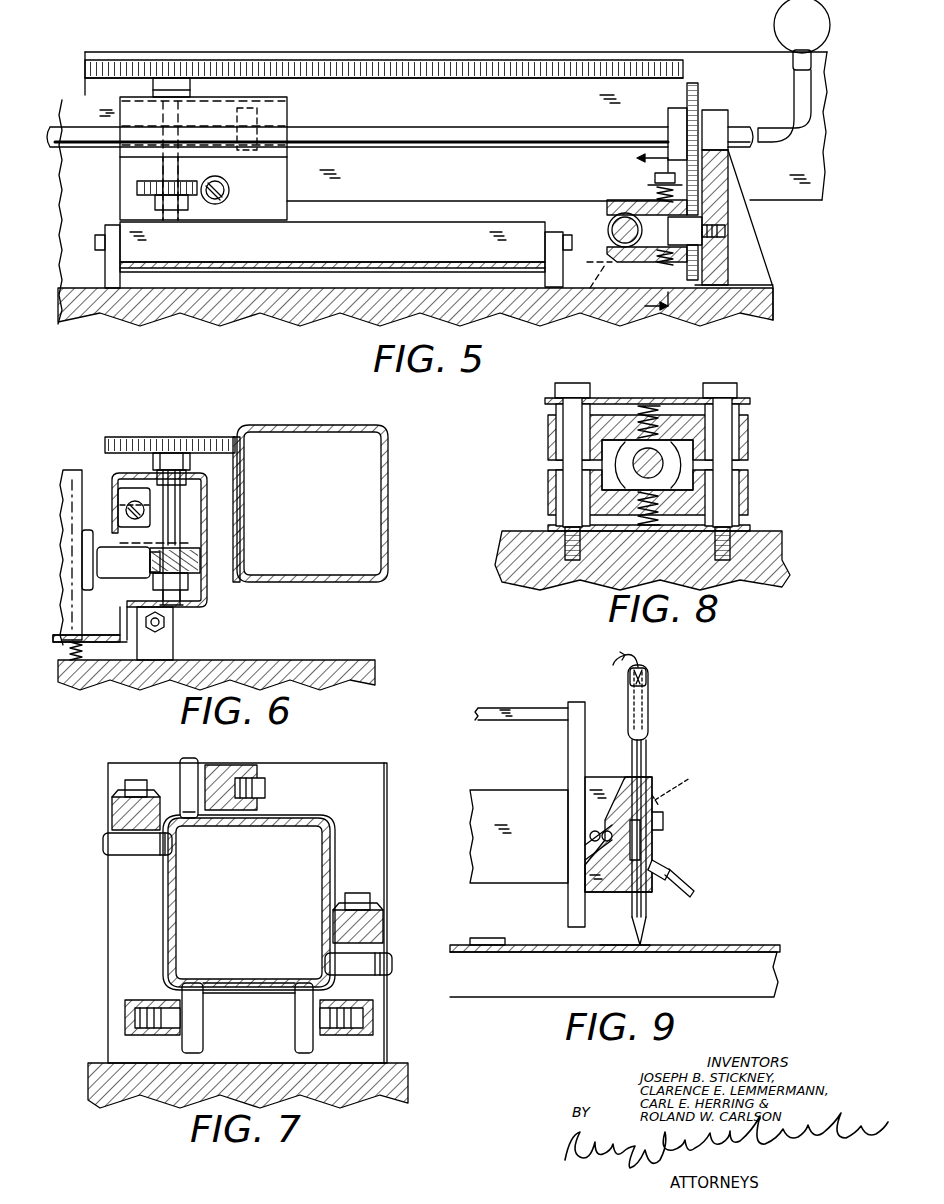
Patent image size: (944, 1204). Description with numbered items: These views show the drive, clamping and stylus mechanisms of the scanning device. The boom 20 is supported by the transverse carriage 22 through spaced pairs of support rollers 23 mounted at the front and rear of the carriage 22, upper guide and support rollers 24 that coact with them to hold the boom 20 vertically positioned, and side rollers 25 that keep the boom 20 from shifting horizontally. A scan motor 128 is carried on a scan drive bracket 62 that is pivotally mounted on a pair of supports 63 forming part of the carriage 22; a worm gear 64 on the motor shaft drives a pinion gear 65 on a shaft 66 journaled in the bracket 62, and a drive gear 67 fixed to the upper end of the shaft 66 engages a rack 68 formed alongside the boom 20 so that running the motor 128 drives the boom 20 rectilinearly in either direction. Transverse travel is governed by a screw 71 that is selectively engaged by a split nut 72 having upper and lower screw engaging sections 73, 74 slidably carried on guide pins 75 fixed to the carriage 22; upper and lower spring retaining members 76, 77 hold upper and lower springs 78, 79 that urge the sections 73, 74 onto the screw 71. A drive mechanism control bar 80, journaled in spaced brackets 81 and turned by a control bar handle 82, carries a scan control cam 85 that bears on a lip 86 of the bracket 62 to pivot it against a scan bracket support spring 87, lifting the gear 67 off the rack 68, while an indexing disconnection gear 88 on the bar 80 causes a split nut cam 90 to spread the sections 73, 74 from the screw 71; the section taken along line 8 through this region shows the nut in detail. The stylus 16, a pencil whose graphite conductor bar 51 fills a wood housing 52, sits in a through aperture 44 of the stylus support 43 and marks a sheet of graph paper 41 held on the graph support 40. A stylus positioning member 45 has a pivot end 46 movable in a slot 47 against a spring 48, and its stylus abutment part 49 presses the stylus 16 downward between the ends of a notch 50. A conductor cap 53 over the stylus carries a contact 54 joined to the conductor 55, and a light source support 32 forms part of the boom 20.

In FIG. 5, the section line 8- 8 is at (643, 244).
In FIG. 9, the stylus 16 is at (648, 752).
In FIG. 5, the boom 20 is at (672, 52).
In FIG. 6, the boom 20 is at (388, 433).
In FIG. 7, the boom 20 is at (333, 835).
In FIG. 9, the boom 20 is at (510, 883).
In FIG. 5, the carriage 22 is at (415, 315).
In FIG. 6, the carriage 22 is at (322, 660).
In FIG. 7, the carriage 22 is at (387, 1048).
In FIG. 7, the support rollers 23 is at (205, 1035).
In FIG. 7, the upper guide and support rollers 24 is at (190, 758).
In FIG. 7, the side rollers 25 is at (147, 850).
In FIG. 9, the light source support 32 is at (525, 708).
In FIG. 9, the graph support 40 is at (777, 978).
In FIG. 9, the graph paper 41 is at (760, 945).
In FIG. 9, the stylus support 43 is at (612, 893).
In FIG. 9, the through aperture 44 is at (655, 777).
In FIG. 9, the stylus positioning member 45 is at (692, 893).
In FIG. 9, the pivot end 46 is at (608, 790).
In FIG. 9, the slot 47 is at (590, 850).
In FIG. 9, the spring 48 is at (590, 838).
In FIG. 9, the stylus abutment part 49 is at (642, 842).
In FIG. 9, the notch 50 is at (655, 822).
In FIG. 9, the conductor bar 51 is at (650, 942).
In FIG. 9, the wood housing 52 is at (648, 930).
In FIG. 9, the conductor cap 53 is at (650, 692).
In FIG. 9, the contact 54 is at (650, 672).
In FIG. 9, the conductor 55 is at (625, 660).
In FIG. 5, the scan drive bracket 62 is at (332, 247).
In FIG. 6, the scan drive bracket 62 is at (210, 505).
In FIG. 5, the supports 63 is at (110, 235).
In FIG. 5, the worm gear 64 is at (230, 193).
In FIG. 6, the worm gear 64 is at (185, 580).
In FIG. 5, the pinion gear 65 is at (150, 181).
In FIG. 6, the pinion gear 65 is at (200, 560).
In FIG. 5, the shaft 66 is at (178, 168).
In FIG. 6, the shaft 66 is at (182, 527).
In FIG. 5, the drive gear 67 is at (213, 62).
In FIG. 6, the drive gear 67 is at (200, 437).
In FIG. 5, the rack 68 is at (347, 60).
In FIG. 6, the rack 68 is at (236, 437).
In FIG. 5, the screw 71 is at (608, 240).
In FIG. 8, the screw 71 is at (648, 463).
In FIG. 5, the split nut 72 is at (634, 270).
In FIG. 8, the split nut 72 is at (535, 446).
In FIG. 5, the upper screw engaging section 73 is at (612, 208).
In FIG. 8, the upper screw engaging section 73 is at (748, 440).
In FIG. 5, the lower screw engaging section 74 is at (612, 262).
In FIG. 8, the lower screw engaging section 74 is at (748, 490).
In FIG. 8, the guide pins 75 is at (565, 412).
In FIG. 8, the upper spring retaining member 76 is at (605, 399).
In FIG. 8, the lower spring retaining member 77 is at (752, 530).
In FIG. 8, the upper spring 78 is at (660, 407).
In FIG. 8, the lower spring 79 is at (660, 524).
In FIG. 5, the drive mechanism control bar 80 is at (507, 148).
In FIG. 5, the brackets 81 is at (740, 92).
In FIG. 5, the control bar handle 82 is at (781, 20).
In FIG. 5, the scan control cam 85 is at (258, 122).
In FIG. 6, the scan control cam 85 is at (127, 498).
In FIG. 6, the lip 86 is at (118, 473).
In FIG. 6, the scan bracket support spring 87 is at (80, 660).
In FIG. 5, the indexing disconnection gear 88 is at (686, 92).
In FIG. 8, the split nut cam 90 is at (618, 474).
In FIG. 6, the scan motor 128 is at (66, 473).